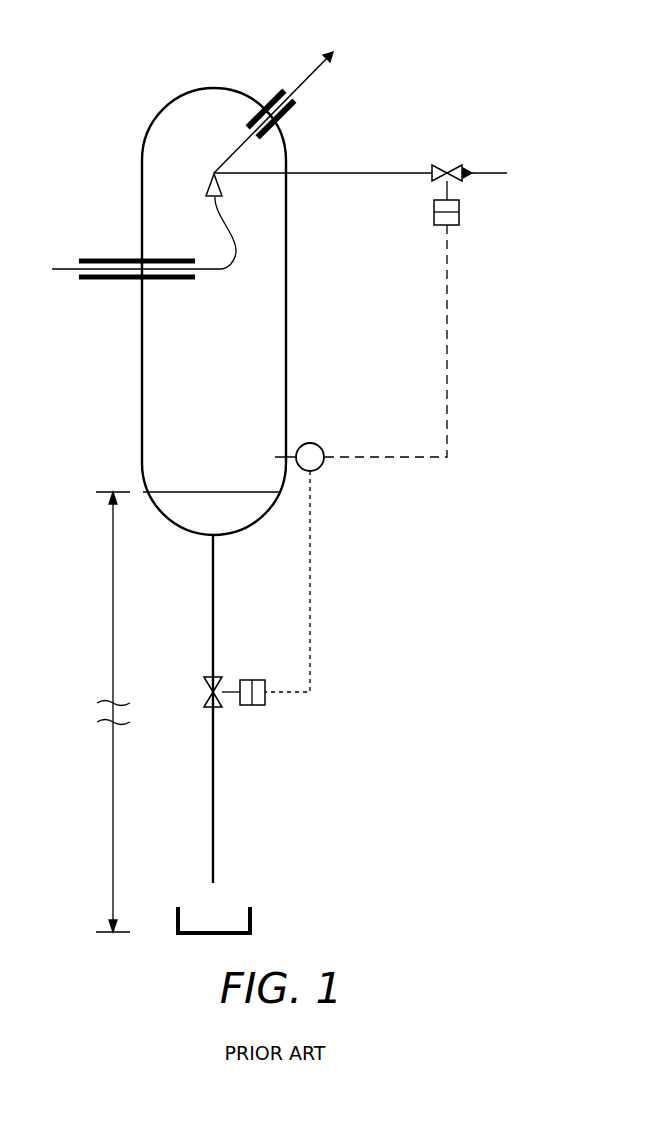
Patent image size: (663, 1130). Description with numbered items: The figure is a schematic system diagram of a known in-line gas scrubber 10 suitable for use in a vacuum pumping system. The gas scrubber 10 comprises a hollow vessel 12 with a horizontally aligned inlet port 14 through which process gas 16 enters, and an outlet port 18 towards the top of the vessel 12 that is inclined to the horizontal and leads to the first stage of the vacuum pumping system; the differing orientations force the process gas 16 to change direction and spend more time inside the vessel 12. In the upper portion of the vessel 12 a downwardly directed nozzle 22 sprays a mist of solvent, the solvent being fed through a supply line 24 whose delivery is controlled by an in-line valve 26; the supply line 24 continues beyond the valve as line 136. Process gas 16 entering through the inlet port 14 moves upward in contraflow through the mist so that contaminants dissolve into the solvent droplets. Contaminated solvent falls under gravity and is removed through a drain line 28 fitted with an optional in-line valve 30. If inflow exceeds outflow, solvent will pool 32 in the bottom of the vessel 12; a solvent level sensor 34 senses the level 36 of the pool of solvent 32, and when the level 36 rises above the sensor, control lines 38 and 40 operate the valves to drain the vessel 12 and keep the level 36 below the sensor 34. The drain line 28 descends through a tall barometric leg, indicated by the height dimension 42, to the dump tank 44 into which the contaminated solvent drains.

The gas scrubber 10 is at (127, 58).
The hollow vessel 12 is at (141, 364).
The inlet port 14 is at (100, 259).
The process gas 16 is at (322, 54).
The outlet port 18 is at (268, 93).
The nozzle 22 is at (208, 178).
The supply line 24 is at (355, 172).
The in-line valve 26 is at (449, 165).
The outlet line extension 136 is at (495, 172).
The drain line 28 is at (212, 604).
The in-line valve 30 is at (205, 688).
The pool of solvent 32 is at (224, 523).
The solvent level sensor 34 is at (310, 442).
The level 36 is at (212, 491).
The control line 38 is at (447, 327).
The control line 40 is at (312, 593).
The height dimension 42 is at (112, 634).
The dump tank 44 is at (252, 920).